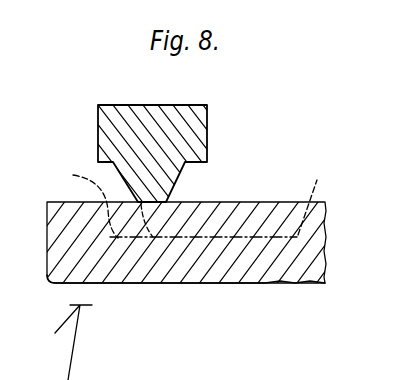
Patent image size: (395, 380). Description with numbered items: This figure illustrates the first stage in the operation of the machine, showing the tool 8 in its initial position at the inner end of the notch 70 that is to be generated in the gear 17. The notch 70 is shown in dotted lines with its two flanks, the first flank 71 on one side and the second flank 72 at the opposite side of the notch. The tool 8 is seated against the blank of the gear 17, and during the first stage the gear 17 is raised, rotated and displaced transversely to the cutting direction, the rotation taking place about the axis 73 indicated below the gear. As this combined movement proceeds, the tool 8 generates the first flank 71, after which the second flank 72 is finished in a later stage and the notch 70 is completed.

The tool 8 is at (218, 134).
The notch 70 is at (250, 233).
The first flank 71 is at (84, 200).
The second flank 72 is at (184, 204).
The gear 17 is at (93, 286).
The axis 73 is at (64, 342).